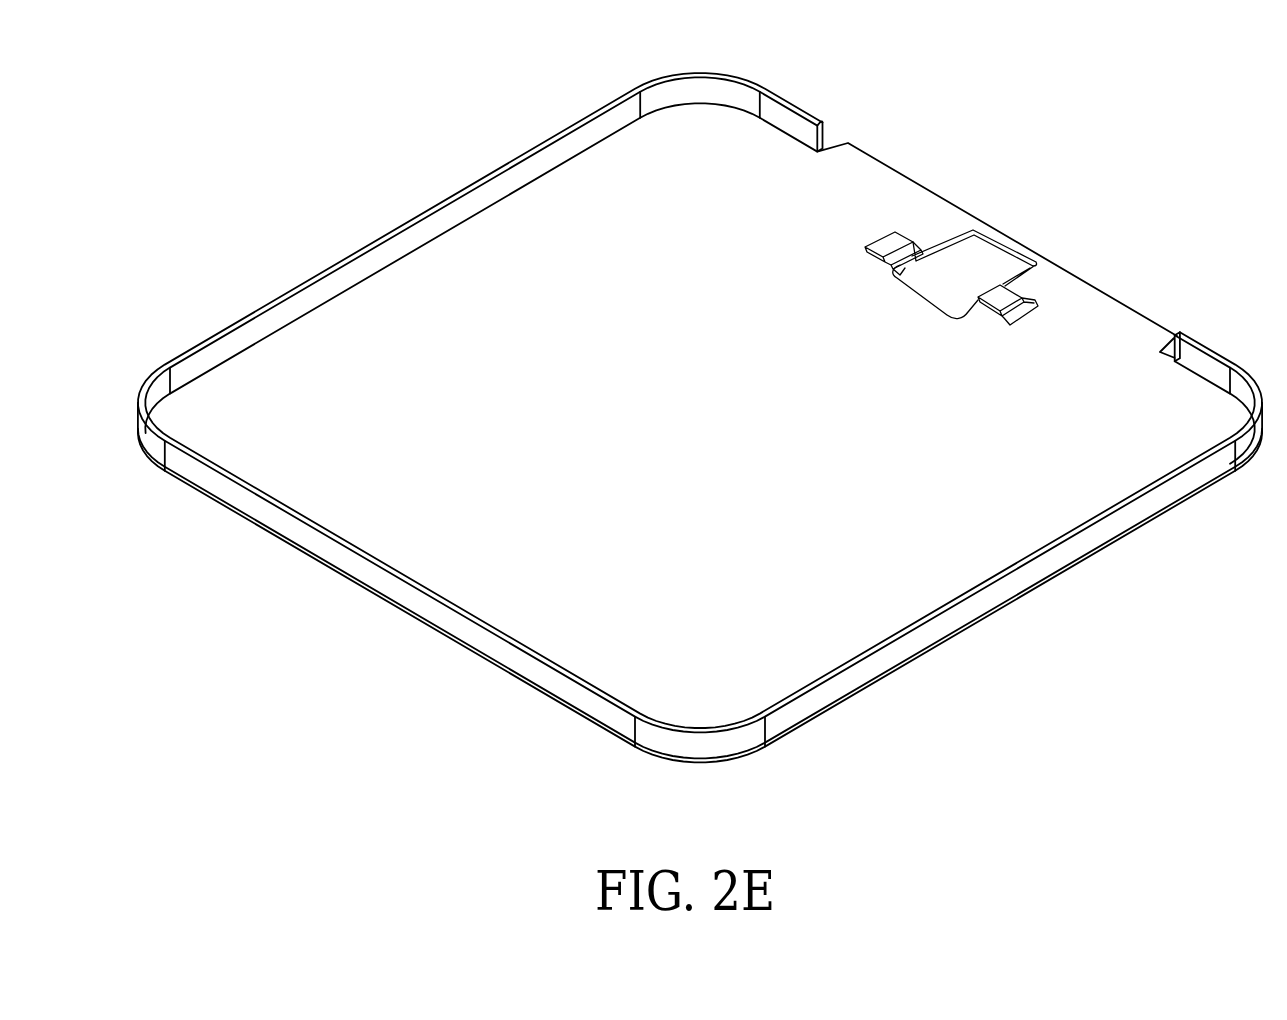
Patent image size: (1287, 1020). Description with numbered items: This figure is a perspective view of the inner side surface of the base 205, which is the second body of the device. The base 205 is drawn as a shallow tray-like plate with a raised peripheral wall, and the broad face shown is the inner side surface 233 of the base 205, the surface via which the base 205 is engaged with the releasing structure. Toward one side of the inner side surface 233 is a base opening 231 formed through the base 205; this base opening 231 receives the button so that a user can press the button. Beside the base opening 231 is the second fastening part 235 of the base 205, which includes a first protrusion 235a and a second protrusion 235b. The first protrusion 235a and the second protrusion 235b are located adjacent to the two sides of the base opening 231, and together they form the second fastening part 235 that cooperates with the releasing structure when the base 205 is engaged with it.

The base 205 is at (1157, 75).
The inner side surface 233 is at (392, 300).
The base opening 231 is at (939, 305).
The second fastening part 235 is at (1007, 255).
The first protrusion 235a is at (929, 243).
The second protrusion 235b is at (1017, 297).